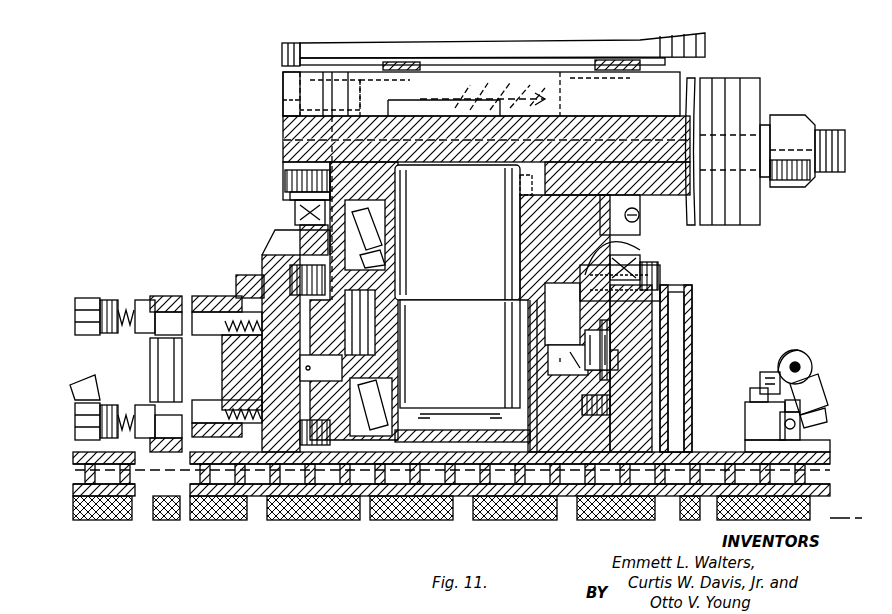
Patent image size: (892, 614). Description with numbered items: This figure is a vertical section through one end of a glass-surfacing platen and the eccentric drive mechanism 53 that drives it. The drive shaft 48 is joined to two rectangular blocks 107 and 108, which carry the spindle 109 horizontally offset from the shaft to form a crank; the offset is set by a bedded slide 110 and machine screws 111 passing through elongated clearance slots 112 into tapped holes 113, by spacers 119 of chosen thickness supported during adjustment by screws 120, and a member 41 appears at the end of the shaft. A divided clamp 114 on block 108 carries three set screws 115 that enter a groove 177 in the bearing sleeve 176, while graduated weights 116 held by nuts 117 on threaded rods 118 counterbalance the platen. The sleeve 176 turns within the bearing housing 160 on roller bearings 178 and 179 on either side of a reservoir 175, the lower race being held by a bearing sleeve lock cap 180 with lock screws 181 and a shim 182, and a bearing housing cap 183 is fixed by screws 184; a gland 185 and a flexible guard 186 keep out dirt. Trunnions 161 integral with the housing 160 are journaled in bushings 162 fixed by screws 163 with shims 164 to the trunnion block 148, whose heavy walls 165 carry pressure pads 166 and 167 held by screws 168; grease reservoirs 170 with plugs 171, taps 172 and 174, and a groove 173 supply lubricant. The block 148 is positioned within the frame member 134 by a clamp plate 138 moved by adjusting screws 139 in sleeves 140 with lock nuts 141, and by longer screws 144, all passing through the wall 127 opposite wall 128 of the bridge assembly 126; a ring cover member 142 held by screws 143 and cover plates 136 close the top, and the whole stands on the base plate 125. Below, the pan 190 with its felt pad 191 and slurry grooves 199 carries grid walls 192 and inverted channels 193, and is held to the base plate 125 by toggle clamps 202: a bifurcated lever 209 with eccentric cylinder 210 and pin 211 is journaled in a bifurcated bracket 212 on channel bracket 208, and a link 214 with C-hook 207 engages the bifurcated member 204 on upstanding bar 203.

The bar end member 41 is at (290, 37).
The drive shaft 48 is at (400, 42).
The eccentric drive mechanism 53 is at (272, 72).
The rectangular block 107 is at (283, 92).
The rectangular block 108 is at (283, 137).
The spindle 109 is at (488, 251).
The bedded slide 110 is at (540, 92).
The machine screw 111 is at (630, 96).
The elongated clearance slot 112 is at (432, 112).
The tapped hole 113 is at (388, 80).
The divided clamp 114 is at (290, 196).
The set screw 115 is at (285, 181).
The graduated weight 116 is at (748, 90).
The nut 117 is at (783, 115).
The threaded rod 118 is at (822, 130).
The spacer 119 is at (340, 72).
The screw 120 is at (300, 72).
The base plate 125 is at (812, 474).
The bridge assembly 126 is at (230, 294).
The wall 127 is at (150, 358).
The wall 128 is at (692, 310).
The frame member 134 is at (248, 365).
The cover plate 136 is at (165, 296).
The clamp plate 138 is at (262, 380).
The adjusting screw 139 is at (108, 300).
The sleeve 140 is at (230, 318).
The lock nut 141 is at (142, 300).
The ring cover member 142 is at (247, 262).
The screw 143 is at (252, 275).
The screw 144 is at (85, 298).
The trunnion block 148 is at (385, 262).
The bearing housing 160 is at (295, 212).
The trunnion 161 is at (262, 400).
The bushing 162 is at (652, 395).
The screw 163 is at (300, 236).
The shim 164 is at (315, 464).
The wall 165 is at (658, 268).
The pressure pad 166 is at (270, 455).
The pressure pad 167 is at (612, 345).
The screw 168 is at (660, 282).
The grease reservoir 170 is at (568, 352).
The plug 171 is at (612, 360).
The tap 172 is at (590, 315).
The groove 173 is at (565, 323).
The tap 174 is at (600, 352).
The reservoir 175 is at (380, 338).
The bearing sleeve 176 is at (380, 216).
The groove 177 is at (385, 205).
The roller bearing 178 is at (400, 365).
The roller bearing 179 is at (382, 235).
The bearing sleeve lock cap 180 is at (395, 464).
The lock screw 181 is at (420, 464).
The shim 182 is at (412, 425).
The bearing housing cap 183 is at (555, 464).
The screw 184 is at (575, 464).
The gland 185 is at (640, 208).
The guard 186 is at (625, 235).
The pan-like member 190 is at (830, 490).
The felt pad 191 is at (110, 510).
The wall 192 is at (450, 490).
The inverted channel 193 is at (706, 452).
The groove 199 is at (150, 516).
The toggle clamp 202 is at (802, 340).
The upstanding bar 203 is at (800, 445).
The bifurcated member 204 is at (802, 428).
The C-hook 207 is at (805, 414).
The channel bracket 208 is at (752, 388).
The bifurcated lever 209 is at (818, 380).
The cylinder 210 is at (806, 353).
The pin 211 is at (812, 360).
The bifurcated bracket 212 is at (770, 372).
The link 214 is at (818, 400).